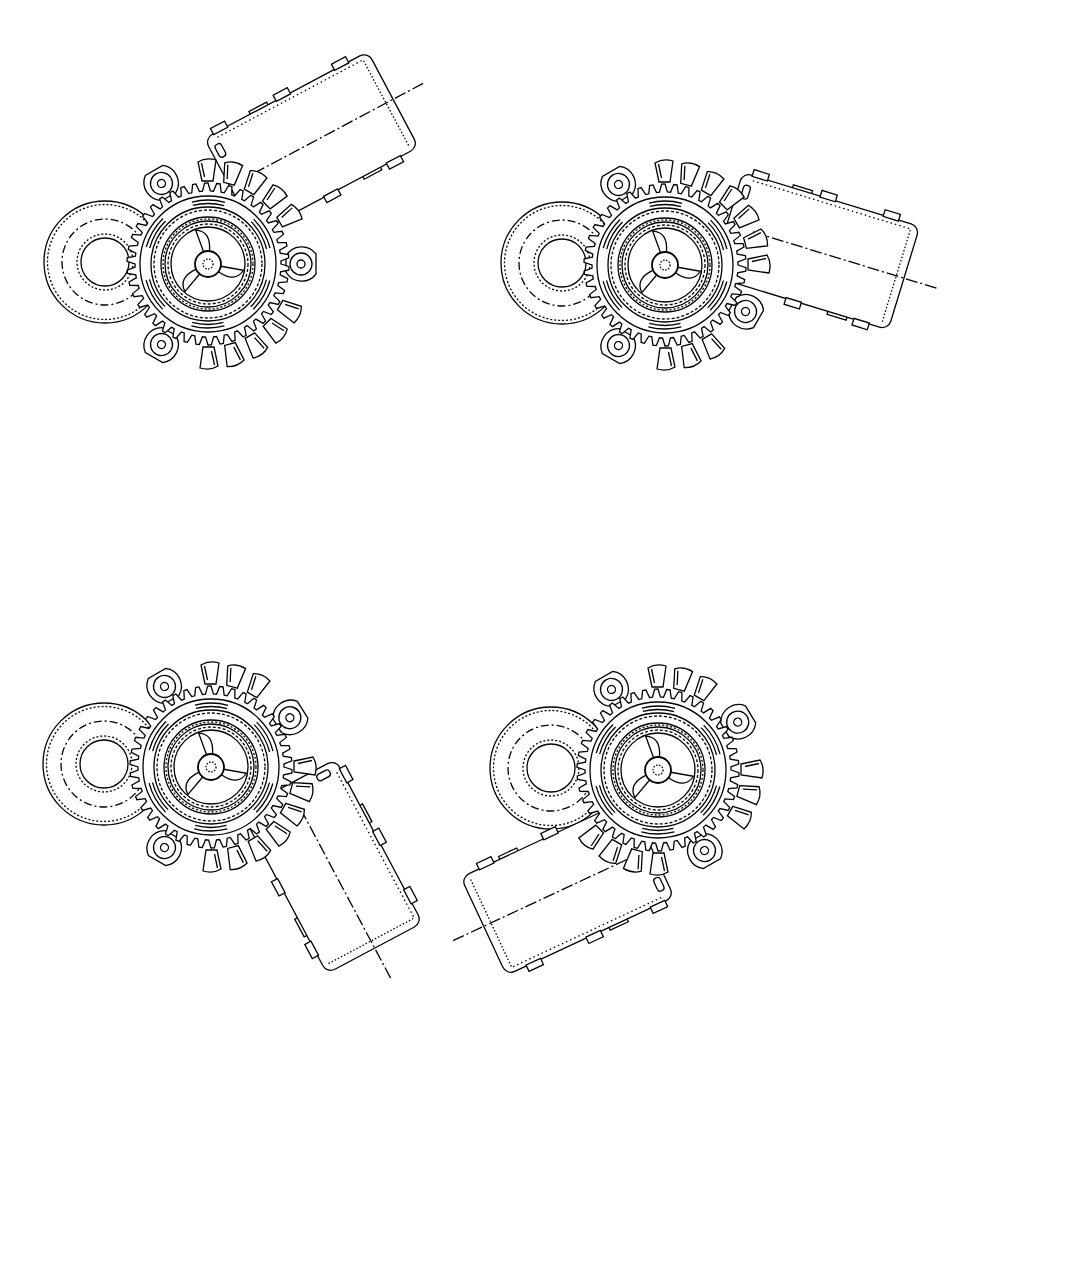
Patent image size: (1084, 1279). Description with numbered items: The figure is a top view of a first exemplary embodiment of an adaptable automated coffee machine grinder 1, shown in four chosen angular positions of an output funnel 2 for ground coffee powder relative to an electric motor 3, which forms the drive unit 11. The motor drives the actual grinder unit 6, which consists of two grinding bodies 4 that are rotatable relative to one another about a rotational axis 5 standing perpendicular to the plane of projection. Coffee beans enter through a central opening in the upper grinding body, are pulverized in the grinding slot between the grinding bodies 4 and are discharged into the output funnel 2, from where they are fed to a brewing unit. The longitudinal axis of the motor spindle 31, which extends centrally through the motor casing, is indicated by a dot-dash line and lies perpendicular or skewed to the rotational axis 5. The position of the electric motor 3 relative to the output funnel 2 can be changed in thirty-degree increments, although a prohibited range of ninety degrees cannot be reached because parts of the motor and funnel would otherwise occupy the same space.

The automated coffee machine grinder 1 is at (197, 51).
The output funnel 2 is at (88, 207).
The electric motor 3 is at (385, 133).
The motor spindle 31 is at (417, 80).
The grinding bodies 4 is at (232, 272).
The rotational axis 5 is at (172, 221).
The grinder unit 6 is at (480, 490).
The drive unit 11 is at (189, 131).